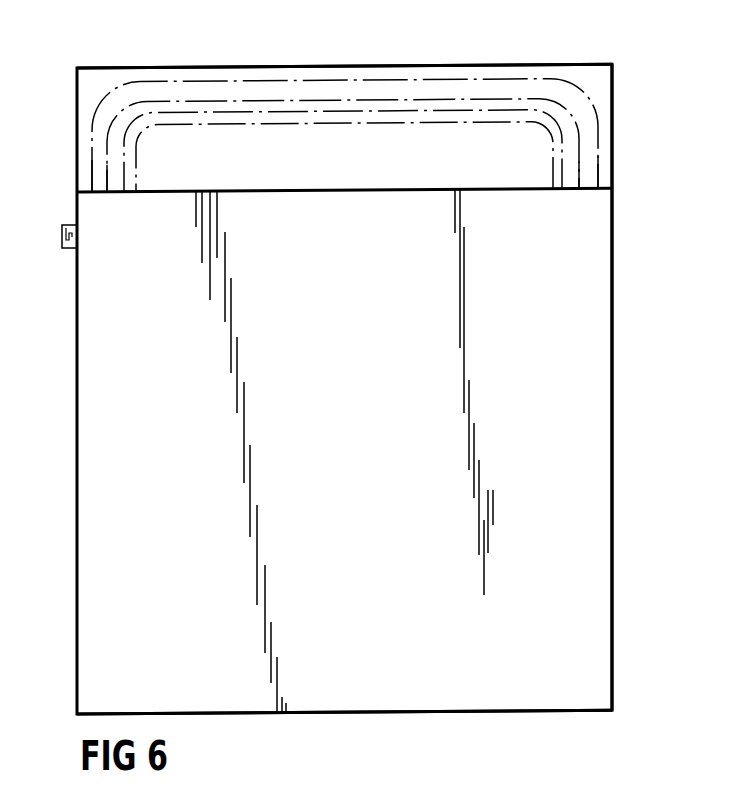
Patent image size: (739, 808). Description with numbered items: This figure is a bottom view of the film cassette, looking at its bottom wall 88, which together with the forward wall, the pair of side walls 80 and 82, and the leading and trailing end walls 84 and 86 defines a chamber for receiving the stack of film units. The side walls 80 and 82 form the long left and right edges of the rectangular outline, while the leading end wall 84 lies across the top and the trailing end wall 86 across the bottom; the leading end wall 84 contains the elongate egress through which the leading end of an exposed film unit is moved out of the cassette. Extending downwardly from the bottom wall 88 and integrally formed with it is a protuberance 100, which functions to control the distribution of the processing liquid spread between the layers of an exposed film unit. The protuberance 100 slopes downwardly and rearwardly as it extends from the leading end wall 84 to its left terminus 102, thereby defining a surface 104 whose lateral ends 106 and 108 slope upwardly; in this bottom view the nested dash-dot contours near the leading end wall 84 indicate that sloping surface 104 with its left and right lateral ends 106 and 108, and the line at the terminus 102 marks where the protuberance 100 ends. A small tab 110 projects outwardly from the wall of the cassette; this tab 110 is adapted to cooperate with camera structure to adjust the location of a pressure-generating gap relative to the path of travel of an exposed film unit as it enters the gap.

The side wall 80 is at (77, 325).
The side wall 82 is at (612, 356).
The leading end wall 84 is at (360, 65).
The trailing end wall 86 is at (404, 713).
The bottom wall 88 is at (330, 386).
The protuberance 100 is at (167, 99).
The left terminus 102 is at (303, 192).
The surface 104 is at (353, 161).
The lateral end 106 is at (103, 152).
The lateral end 108 is at (592, 148).
The tab 110 is at (67, 224).